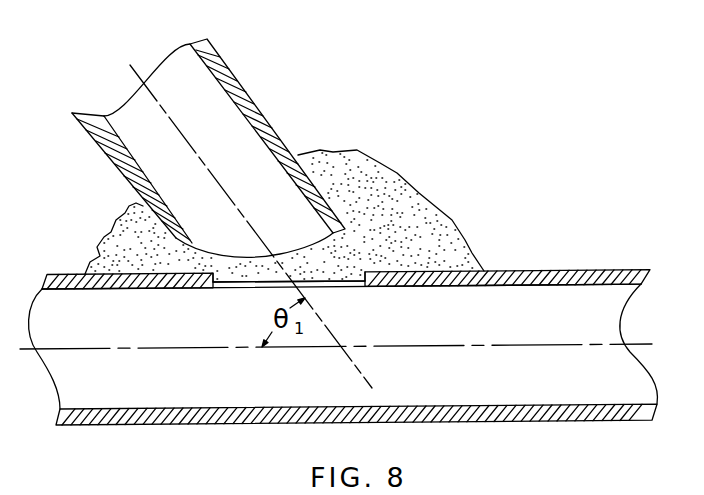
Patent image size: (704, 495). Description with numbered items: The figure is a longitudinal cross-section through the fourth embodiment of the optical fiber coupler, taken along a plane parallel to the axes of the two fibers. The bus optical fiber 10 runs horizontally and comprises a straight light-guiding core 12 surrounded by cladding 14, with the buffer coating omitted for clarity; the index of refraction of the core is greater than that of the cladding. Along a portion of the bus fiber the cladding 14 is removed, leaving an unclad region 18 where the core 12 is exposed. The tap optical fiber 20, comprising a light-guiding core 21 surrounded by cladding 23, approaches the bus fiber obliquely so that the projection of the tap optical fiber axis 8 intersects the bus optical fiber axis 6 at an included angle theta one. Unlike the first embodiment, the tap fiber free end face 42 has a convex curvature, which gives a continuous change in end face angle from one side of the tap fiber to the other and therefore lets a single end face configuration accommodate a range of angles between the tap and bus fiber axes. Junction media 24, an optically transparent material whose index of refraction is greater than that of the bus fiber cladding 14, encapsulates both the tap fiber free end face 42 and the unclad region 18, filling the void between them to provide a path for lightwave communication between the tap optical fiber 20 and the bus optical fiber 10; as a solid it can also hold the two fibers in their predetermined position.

The bus optical fiber axis 6 is at (190, 348).
The tap optical fiber axis 8 is at (203, 160).
The bus optical fiber 10 is at (354, 304).
The light-guiding core 12 is at (553, 325).
The cladding 14 is at (73, 274).
The unclad region 18 is at (362, 283).
The tap optical fiber 20 is at (230, 200).
The light-guiding core 21 is at (204, 108).
The cladding 23 is at (221, 57).
The junction media 24 is at (405, 193).
The tap fiber free end face 42 is at (345, 257).